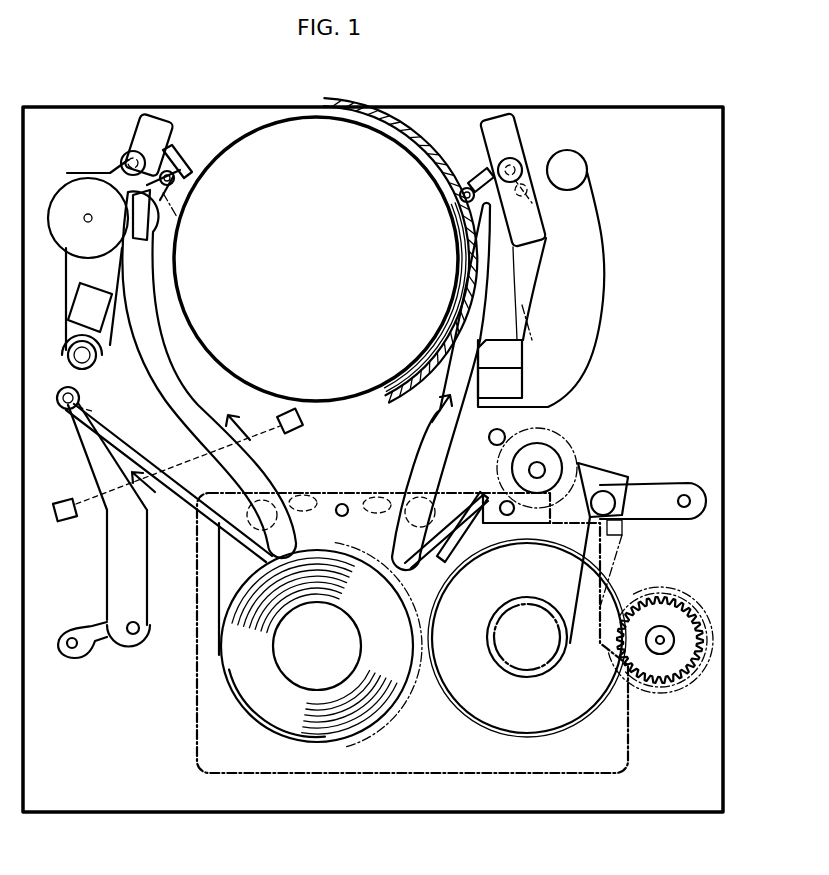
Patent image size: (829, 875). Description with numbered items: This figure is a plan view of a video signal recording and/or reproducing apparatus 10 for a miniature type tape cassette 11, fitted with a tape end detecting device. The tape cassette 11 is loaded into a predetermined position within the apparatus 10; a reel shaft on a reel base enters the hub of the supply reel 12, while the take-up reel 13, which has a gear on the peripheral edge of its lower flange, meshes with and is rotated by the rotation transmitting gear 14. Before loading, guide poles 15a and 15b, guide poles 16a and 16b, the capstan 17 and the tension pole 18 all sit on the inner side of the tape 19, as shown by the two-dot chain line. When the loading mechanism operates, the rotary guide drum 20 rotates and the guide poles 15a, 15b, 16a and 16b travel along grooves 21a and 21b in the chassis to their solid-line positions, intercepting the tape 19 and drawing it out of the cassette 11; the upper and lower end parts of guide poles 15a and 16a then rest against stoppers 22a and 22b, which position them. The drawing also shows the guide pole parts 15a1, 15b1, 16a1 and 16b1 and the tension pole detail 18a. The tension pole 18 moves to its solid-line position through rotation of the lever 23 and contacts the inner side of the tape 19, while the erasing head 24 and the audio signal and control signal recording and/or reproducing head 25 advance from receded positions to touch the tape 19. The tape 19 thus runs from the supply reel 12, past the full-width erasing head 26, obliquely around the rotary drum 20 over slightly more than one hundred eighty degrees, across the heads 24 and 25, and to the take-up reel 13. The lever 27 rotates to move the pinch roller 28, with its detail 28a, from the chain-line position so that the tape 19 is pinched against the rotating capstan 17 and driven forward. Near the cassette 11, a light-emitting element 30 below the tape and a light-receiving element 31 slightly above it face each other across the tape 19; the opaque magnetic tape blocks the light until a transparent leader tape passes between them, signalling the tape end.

The recording and/or reproducing apparatus 10 is at (604, 97).
The tape cassette 11 is at (632, 742).
The supply reel 12 is at (400, 705).
The take-up reel 13 is at (591, 712).
The rotation transmitting gear 14 is at (680, 668).
The guide pole 15a is at (128, 148).
The guide pole 15b is at (172, 172).
The first guide roller support 15a1 is at (138, 243).
The first guide pin support 15b1 is at (176, 207).
The guide pole 16a is at (522, 160).
The guide pole 16b is at (470, 184).
The second guide roller support 16a1 is at (519, 193).
The second guide pin support 16b1 is at (462, 205).
The capstan 17 is at (480, 520).
The tension pole 18 is at (78, 392).
The pivot pin 18a is at (95, 412).
The tape 19 is at (128, 450).
The rotary guide drum 20 is at (292, 128).
The groove 21a is at (163, 380).
The groove 21b is at (460, 408).
The stopper 22a is at (154, 120).
The stopper 22b is at (500, 122).
The lever 23 is at (110, 520).
The erasing head 24 is at (522, 357).
The audio signal and control signal recording and/or reproducing head 25 is at (522, 383).
The full-width erasing head 26 is at (78, 303).
The lever 27 is at (643, 518).
The pinch roller 28 is at (552, 432).
The cam follower pin 28a is at (553, 447).
The light-emitting element 30 is at (294, 426).
The light-receiving element 31 is at (60, 501).